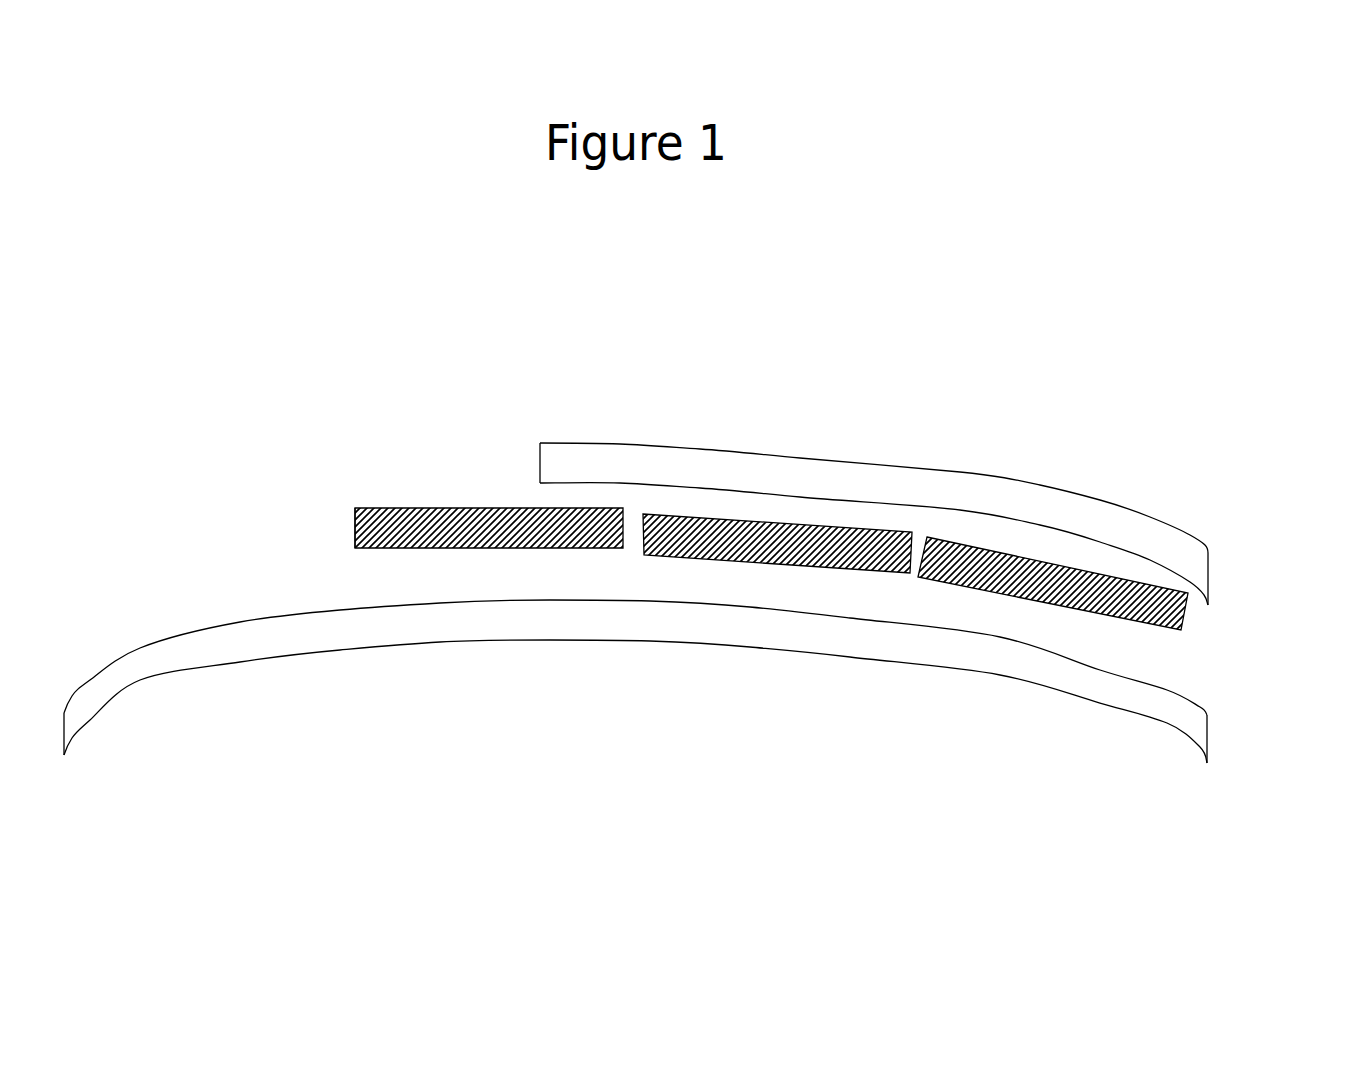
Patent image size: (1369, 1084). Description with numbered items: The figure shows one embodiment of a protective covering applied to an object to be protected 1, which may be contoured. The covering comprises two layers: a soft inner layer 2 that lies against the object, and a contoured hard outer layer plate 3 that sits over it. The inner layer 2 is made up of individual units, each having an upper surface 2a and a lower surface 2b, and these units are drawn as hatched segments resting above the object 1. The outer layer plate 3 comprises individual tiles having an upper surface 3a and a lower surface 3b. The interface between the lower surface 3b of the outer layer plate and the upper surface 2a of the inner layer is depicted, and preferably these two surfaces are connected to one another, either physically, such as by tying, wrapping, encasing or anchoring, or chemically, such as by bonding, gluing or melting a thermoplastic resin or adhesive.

The object to be protected 1 is at (643, 693).
The inner layer 2 is at (739, 649).
The upper surface of the inner layer 2a is at (438, 499).
The lower surface of the inner layer 2b is at (312, 550).
The outer layer plate 3 is at (796, 459).
The upper surface of the outer layer 3a is at (862, 451).
The lower surface of the outer layer 3b is at (594, 475).